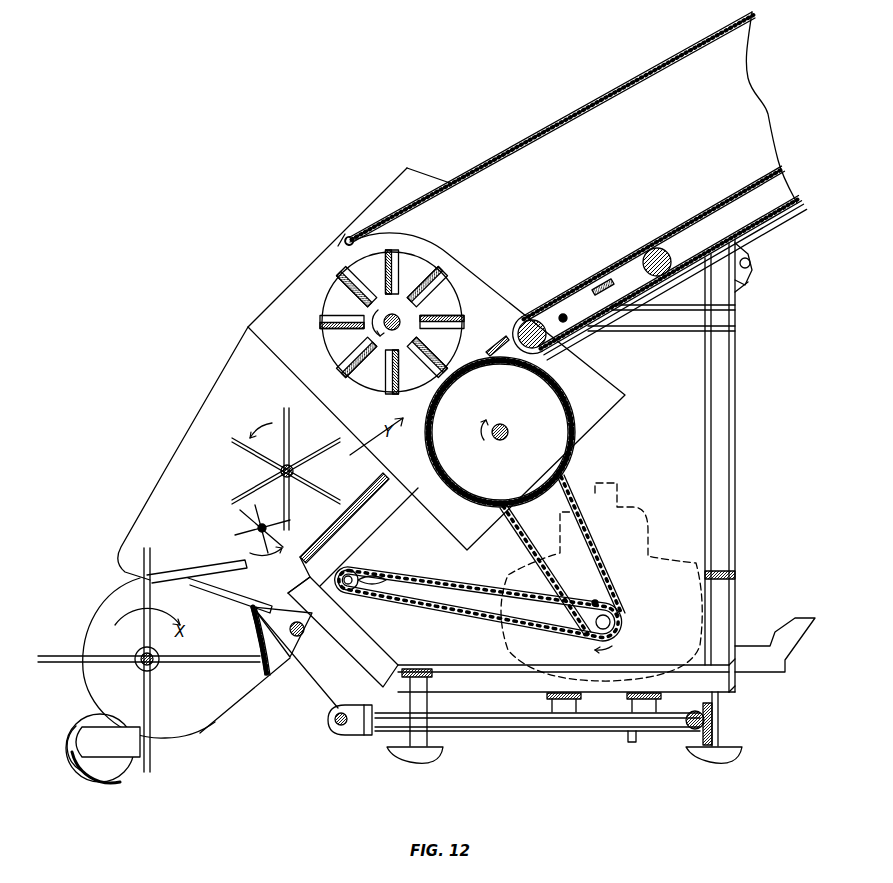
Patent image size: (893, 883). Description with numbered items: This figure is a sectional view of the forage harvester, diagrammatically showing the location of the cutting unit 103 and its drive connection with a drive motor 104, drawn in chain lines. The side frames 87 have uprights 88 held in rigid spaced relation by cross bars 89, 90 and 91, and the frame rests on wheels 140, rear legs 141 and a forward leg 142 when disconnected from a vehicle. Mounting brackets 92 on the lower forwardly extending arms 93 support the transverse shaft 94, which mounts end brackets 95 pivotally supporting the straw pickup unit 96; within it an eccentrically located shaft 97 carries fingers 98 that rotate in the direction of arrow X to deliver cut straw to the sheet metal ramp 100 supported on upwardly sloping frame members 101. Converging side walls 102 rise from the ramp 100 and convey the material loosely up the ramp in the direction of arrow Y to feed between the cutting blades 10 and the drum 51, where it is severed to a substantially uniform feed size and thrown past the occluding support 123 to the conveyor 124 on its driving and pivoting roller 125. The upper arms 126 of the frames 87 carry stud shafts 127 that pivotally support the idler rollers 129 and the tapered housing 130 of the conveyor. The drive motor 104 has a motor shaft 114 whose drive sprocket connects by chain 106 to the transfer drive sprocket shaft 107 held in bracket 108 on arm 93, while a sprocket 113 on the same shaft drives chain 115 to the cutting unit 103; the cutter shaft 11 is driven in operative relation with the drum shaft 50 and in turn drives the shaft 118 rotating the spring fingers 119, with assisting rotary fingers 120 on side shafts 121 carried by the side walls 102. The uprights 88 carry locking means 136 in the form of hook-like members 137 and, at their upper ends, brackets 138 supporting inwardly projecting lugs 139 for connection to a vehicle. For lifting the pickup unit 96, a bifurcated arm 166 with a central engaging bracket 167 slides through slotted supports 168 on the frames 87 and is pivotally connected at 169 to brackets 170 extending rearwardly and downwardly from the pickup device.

The cutting blades 10 is at (322, 338).
The cutter shaft 11 is at (401, 322).
The shaft 50 is at (508, 438).
The drum 51 is at (574, 412).
The side frames 87 is at (748, 463).
The uprights 88 is at (736, 442).
The cross bar 89 is at (726, 582).
The cross bar 90 is at (553, 702).
The cross bar 91 is at (309, 570).
The mounting brackets 92 is at (324, 634).
The lower forwardly extending arms 93 is at (366, 660).
The transverse shaft 94 is at (292, 626).
The end brackets 95 is at (284, 662).
The straw pickup unit 96 is at (212, 746).
The eccentrically located shaft 97 is at (155, 668).
The fingers 98 is at (53, 664).
The sheet metal ramp 100 is at (334, 530).
The upwardly sloping frame members 101 is at (362, 534).
The converging side walls 102 is at (201, 435).
The cutting unit 103 is at (336, 246).
The drive motor 104 is at (608, 484).
The chain 106 is at (426, 570).
The transfer drive sprocket shaft 107 is at (368, 582).
The bracket 108 is at (373, 563).
The sprocket 113 is at (615, 606).
The motor shaft 114 is at (610, 623).
The chain 115 is at (596, 553).
The shaft 118 is at (296, 471).
The spring fingers 119 is at (284, 420).
The assisting rotary fingers 120 is at (250, 515).
The side shafts 121 is at (256, 528).
The occluding support 123 is at (500, 338).
The conveyor 124 is at (610, 276).
The driving and pivoting roller 125 is at (525, 322).
The upper arms 126 is at (660, 329).
The stud shafts 127 is at (563, 316).
The idler rollers 129 is at (666, 258).
The tapered box structure or housing 130 is at (629, 100).
The locking means 136 is at (763, 681).
The hook-like members 137 is at (773, 626).
The brackets 138 is at (746, 284).
The lugs 139 is at (751, 260).
The wheels 140 is at (78, 776).
The rear legs 141 is at (728, 751).
The forward leg 142 is at (404, 756).
The bifurcated arm 166 is at (476, 732).
The engaging bracket 167 is at (714, 719).
The slotted supports 168 is at (630, 742).
The pivotal connection 169 is at (348, 732).
The brackets 170 is at (277, 704).